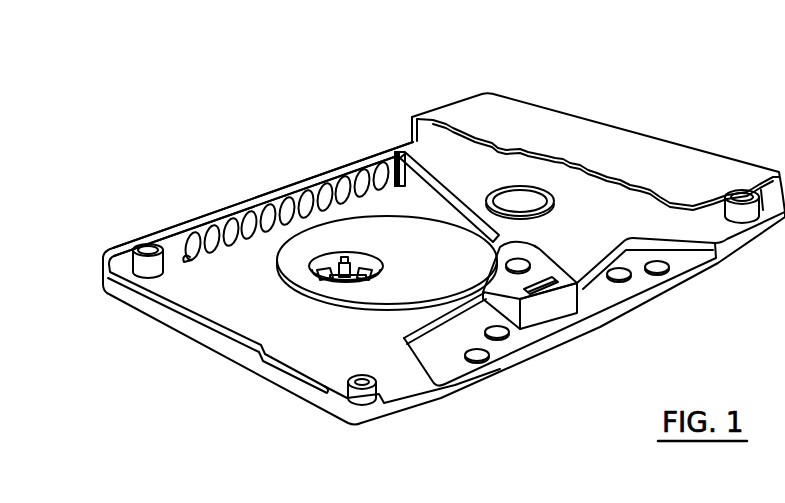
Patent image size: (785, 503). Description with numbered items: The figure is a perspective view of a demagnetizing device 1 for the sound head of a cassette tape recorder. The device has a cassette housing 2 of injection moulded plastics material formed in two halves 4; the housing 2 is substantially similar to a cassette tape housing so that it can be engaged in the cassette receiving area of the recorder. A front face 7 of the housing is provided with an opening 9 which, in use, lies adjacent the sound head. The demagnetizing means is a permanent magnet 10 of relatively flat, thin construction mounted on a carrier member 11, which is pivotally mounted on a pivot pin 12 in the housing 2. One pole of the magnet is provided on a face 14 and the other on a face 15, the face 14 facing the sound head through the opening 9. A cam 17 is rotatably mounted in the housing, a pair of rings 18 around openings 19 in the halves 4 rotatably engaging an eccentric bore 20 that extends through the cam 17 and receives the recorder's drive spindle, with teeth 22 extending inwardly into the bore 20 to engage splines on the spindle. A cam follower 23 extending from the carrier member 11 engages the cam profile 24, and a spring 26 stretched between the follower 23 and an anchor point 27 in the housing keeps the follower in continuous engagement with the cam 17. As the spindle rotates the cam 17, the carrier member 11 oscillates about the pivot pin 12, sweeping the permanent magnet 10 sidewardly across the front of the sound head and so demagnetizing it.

The demagnetizing device 1 is at (625, 103).
The cassette housing 2 is at (642, 207).
The halves 4 is at (497, 160).
The front face 7 is at (380, 405).
The opening 9 is at (555, 300).
The permanent magnet 10 is at (568, 318).
The carrier member 11 is at (494, 296).
The pivot pin 12 is at (517, 258).
The face 14 is at (537, 296).
The face 15 is at (562, 260).
The cam 17 is at (282, 282).
The rings 18 is at (312, 267).
The openings 19 is at (341, 262).
The eccentric bore 20 is at (248, 224).
The teeth 22 is at (350, 258).
The cam follower 23 is at (388, 155).
The cam profile 24 is at (290, 281).
The spring 26 is at (360, 160).
The anchor point 27 is at (150, 272).